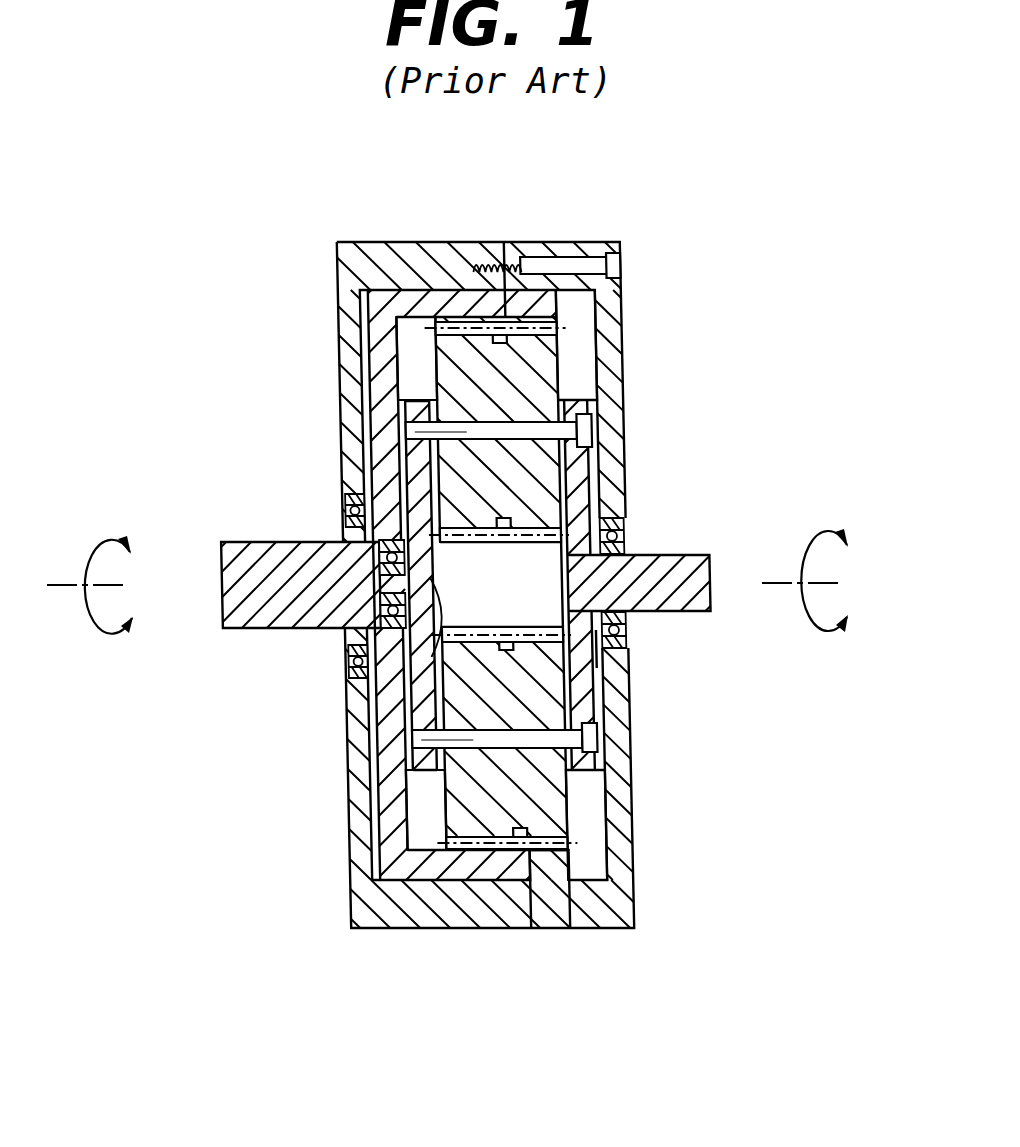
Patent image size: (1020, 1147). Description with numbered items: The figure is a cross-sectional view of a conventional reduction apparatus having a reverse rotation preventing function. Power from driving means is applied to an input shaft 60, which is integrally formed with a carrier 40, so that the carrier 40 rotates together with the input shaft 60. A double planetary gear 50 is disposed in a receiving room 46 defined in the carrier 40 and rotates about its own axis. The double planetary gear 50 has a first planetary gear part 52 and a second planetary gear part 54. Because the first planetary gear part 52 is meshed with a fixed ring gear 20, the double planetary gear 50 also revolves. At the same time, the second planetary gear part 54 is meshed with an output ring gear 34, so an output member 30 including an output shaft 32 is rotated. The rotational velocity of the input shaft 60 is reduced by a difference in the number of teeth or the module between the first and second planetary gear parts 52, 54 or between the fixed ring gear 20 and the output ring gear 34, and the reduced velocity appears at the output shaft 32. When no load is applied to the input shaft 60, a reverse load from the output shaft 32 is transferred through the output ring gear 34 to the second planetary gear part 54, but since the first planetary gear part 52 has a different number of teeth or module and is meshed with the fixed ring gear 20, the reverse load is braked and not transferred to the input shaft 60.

The fixed ring gear 20 is at (548, 930).
The output member 30 is at (373, 569).
The output shaft 32 is at (280, 630).
The output ring gear 34 is at (432, 292).
The carrier 40 is at (578, 543).
The receiving room 46 is at (383, 718).
The double planetary gear 50 is at (423, 695).
The first planetary gear part 52 is at (538, 823).
The second planetary gear part 54 is at (480, 828).
The input shaft 60 is at (678, 580).